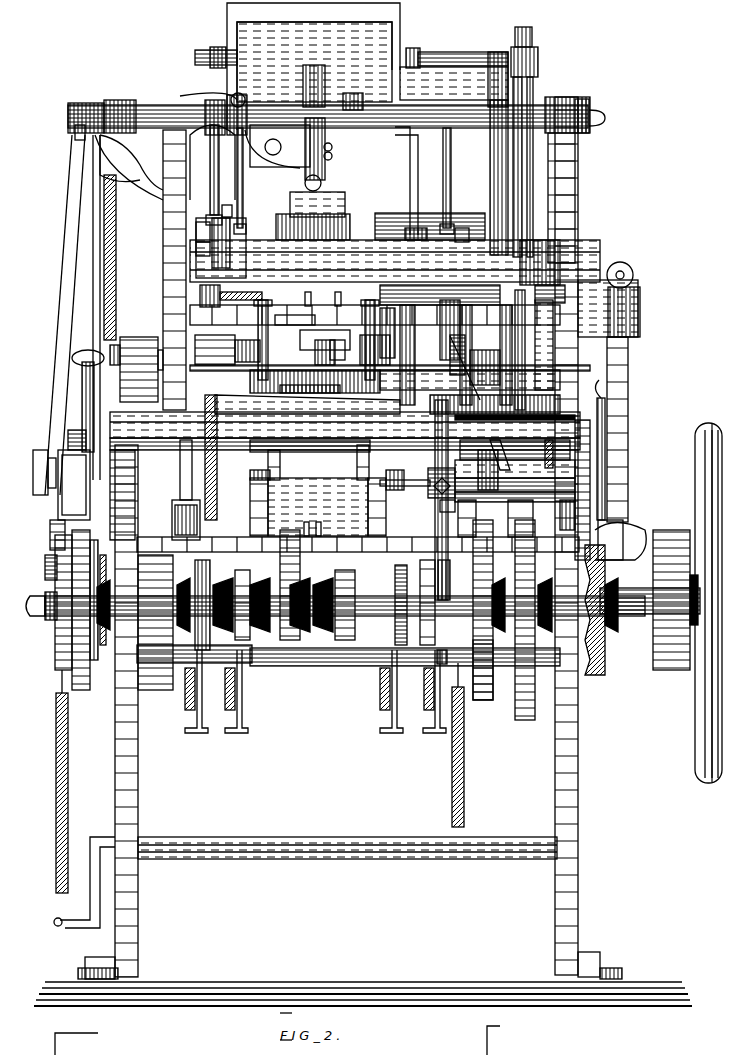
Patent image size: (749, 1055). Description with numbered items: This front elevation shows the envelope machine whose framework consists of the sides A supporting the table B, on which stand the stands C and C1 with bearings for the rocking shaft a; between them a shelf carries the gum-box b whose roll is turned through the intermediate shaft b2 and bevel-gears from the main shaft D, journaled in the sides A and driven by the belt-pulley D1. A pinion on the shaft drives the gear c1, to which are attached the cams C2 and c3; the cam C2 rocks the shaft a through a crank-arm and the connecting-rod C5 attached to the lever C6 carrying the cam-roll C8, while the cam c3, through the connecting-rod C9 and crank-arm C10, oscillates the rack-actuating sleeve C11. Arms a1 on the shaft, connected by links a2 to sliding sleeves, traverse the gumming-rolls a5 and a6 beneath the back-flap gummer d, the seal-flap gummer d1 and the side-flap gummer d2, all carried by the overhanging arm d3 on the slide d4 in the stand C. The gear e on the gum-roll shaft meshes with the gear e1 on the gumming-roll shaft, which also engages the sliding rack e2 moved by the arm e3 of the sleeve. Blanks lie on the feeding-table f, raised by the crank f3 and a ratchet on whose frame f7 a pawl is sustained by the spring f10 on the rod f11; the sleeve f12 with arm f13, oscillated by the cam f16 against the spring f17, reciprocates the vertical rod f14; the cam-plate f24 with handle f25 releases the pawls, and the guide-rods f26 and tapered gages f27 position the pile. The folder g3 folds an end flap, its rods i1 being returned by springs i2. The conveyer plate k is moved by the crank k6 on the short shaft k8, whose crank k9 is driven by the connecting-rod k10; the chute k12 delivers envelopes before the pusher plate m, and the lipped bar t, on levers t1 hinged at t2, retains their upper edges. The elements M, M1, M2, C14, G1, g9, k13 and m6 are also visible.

The side A is at (350, 538).
The main casting M is at (392, 40).
The bar M1 is at (442, 60).
The post M2 is at (535, 35).
The rocking shaft a is at (485, 117).
The arm a1 is at (244, 190).
The link a2 is at (230, 208).
The gumming-roll a5 is at (405, 234).
The gumming-roll a6 is at (430, 233).
The stand C is at (164, 238).
The stand C1 is at (578, 193).
The cam C2 is at (56, 650).
The gear c1 is at (85, 665).
The cam c3 is at (98, 602).
The connecting-rod C5 is at (70, 262).
The lever C6 is at (34, 480).
The cam-roll C8 is at (52, 555).
The connecting-rod C9 is at (93, 272).
The crank-arm C10 is at (90, 104).
The rack-actuating sleeve C11 is at (148, 112).
The bracket C14 is at (82, 140).
The back-flap gummer or pick-up d is at (283, 230).
The seal-flap gummer or pick-up d1 is at (181, 470).
The side-flap gummer or pick-up d2 is at (411, 186).
The overhanging arm d3 is at (288, 146).
The slide d4 is at (195, 99).
The gear e is at (220, 248).
The gear e1 is at (204, 248).
The sliding rack e2 is at (204, 232).
The arm e3 is at (211, 183).
The gum-box b is at (395, 247).
The intermediate shaft b2 is at (628, 368).
The table B is at (345, 422).
The feeding-table f is at (398, 397).
The crank f3 is at (434, 490).
The frame f7 is at (510, 484).
The spring f10 is at (545, 450).
The rod f11 is at (510, 656).
The sleeve f12 is at (345, 666).
The arm f13 is at (430, 660).
The vertical rod f14 is at (446, 572).
The cam f16 is at (272, 663).
The spring f17 is at (466, 755).
The arc-shaped cam-plate f24 is at (398, 358).
The spur or handle f25 is at (602, 448).
The guide-rod f26 is at (260, 358).
The tapered gage f27 is at (268, 312).
The guide bar G1 is at (375, 305).
The folder g3 is at (325, 347).
The gear g9 is at (575, 514).
The plate k is at (136, 369).
The crank k6 is at (282, 444).
The short shaft k8 is at (153, 445).
The crank k9 is at (74, 432).
The connecting-rod k10 is at (62, 480).
The chute k12 is at (280, 463).
The post k13 is at (358, 450).
The plate m is at (318, 482).
The rod m6 is at (395, 476).
The bar t is at (251, 495).
The lever t1 is at (252, 480).
The hinge t2 is at (405, 486).
The rod i1 is at (315, 700).
The spring i2 is at (298, 689).
The main shaft D is at (640, 612).
The belt-pulley D1 is at (670, 668).